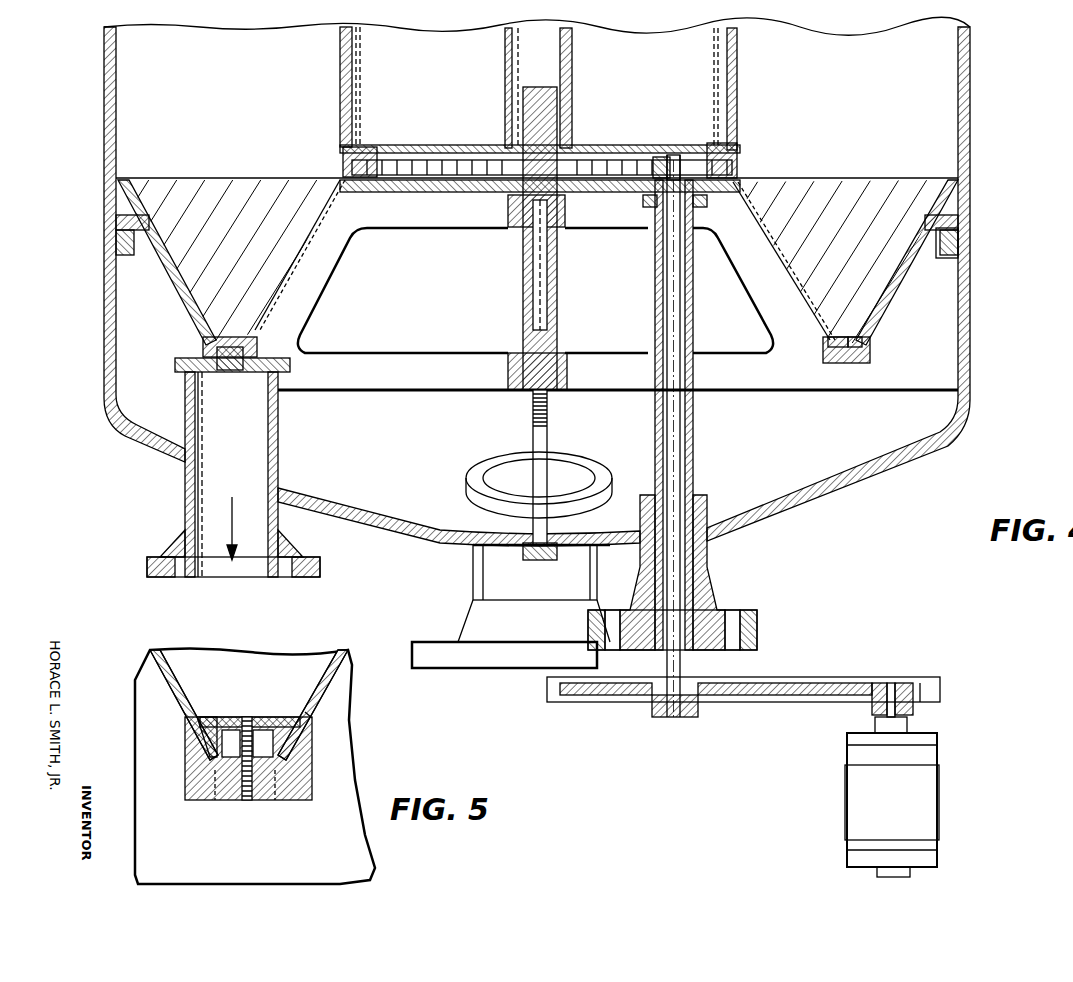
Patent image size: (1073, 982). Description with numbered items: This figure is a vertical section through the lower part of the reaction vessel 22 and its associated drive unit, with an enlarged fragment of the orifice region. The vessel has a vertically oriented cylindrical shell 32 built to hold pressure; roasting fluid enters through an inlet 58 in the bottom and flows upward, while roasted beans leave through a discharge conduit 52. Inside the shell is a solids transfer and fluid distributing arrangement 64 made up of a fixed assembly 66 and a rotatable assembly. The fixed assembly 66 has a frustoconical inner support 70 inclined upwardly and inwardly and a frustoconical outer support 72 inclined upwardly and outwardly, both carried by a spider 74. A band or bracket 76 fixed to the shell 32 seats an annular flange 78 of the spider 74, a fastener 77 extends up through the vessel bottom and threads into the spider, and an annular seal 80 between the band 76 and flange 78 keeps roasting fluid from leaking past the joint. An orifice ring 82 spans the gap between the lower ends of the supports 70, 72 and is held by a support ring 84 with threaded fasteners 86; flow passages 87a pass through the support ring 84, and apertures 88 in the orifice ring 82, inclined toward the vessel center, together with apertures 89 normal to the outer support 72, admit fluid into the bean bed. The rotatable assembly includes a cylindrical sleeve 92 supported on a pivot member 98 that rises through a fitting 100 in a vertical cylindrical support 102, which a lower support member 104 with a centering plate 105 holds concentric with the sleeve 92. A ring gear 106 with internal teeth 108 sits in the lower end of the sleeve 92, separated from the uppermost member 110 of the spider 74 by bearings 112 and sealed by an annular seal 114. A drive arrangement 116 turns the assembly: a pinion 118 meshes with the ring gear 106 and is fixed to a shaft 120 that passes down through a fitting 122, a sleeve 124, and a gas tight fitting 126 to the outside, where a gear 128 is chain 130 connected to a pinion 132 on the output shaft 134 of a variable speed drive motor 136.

In FIG. 4, the reaction vessel 22 is at (68, 117).
In FIG. 4, the cylindrical shell 32 is at (104, 283).
In FIG. 4, the discharge conduit 52 is at (185, 501).
In FIG. 4, the inlet 58 is at (470, 583).
In FIG. 4, the solids transfer and fluid distributing arrangement 64 is at (318, 141).
In FIG. 4, the fixed assembly 66 is at (942, 289).
In FIG. 4, the inner support 70 is at (752, 195).
In FIG. 5, the inner support 70 is at (160, 650).
In FIG. 4, the outer support 72 is at (955, 197).
In FIG. 5, the outer support 72 is at (337, 650).
In FIG. 4, the spider 74 is at (340, 290).
In FIG. 5, the spider 74 is at (348, 888).
In FIG. 4, the band or bracket 76 is at (958, 247).
In FIG. 4, the fastener 77 is at (555, 462).
In FIG. 4, the annular flange 78 is at (950, 218).
In FIG. 4, the annular seal 80 is at (955, 235).
In FIG. 4, the orifice ring 82 is at (868, 345).
In FIG. 5, the orifice ring 82 is at (283, 717).
In FIG. 4, the support ring 84 is at (822, 357).
In FIG. 5, the support ring 84 is at (197, 802).
In FIG. 4, the threaded fasteners 86 is at (230, 358).
In FIG. 5, the threaded fasteners 86 is at (248, 803).
In FIG. 5, the flow passages 87a is at (276, 800).
In FIG. 4, the apertures 88 is at (840, 335).
In FIG. 5, the apertures 88 is at (212, 718).
In FIG. 4, the apertures 89 is at (885, 290).
In FIG. 5, the apertures 89 is at (308, 715).
In FIG. 4, the sleeve 92 is at (738, 68).
In FIG. 4, the pivot member 98 is at (522, 105).
In FIG. 4, the fitting 100 is at (578, 100).
In FIG. 4, the vertical cylindrical support 102 is at (578, 47).
In FIG. 4, the lower support member 104 is at (368, 142).
In FIG. 4, the centering plate 105 is at (503, 145).
In FIG. 4, the ring gear 106 is at (340, 169).
In FIG. 4, the internal teeth 108 is at (445, 188).
In FIG. 4, the uppermost member 110 is at (320, 212).
In FIG. 4, the bearings 112 is at (702, 148).
In FIG. 4, the annular seal 114 is at (738, 165).
In FIG. 4, the drive arrangement 116 is at (662, 436).
In FIG. 4, the pinion 118 is at (660, 158).
In FIG. 4, the shaft 120 is at (692, 290).
In FIG. 4, the fitting 122 is at (656, 232).
In FIG. 4, the sleeve 124 is at (652, 342).
In FIG. 4, the gas tight fitting 126 is at (708, 575).
In FIG. 4, the gear 128 is at (590, 703).
In FIG. 4, the chain 130 is at (790, 712).
In FIG. 4, the pinion 132 is at (915, 703).
In FIG. 4, the output shaft 134 is at (898, 683).
In FIG. 4, the drive motor 136 is at (937, 783).